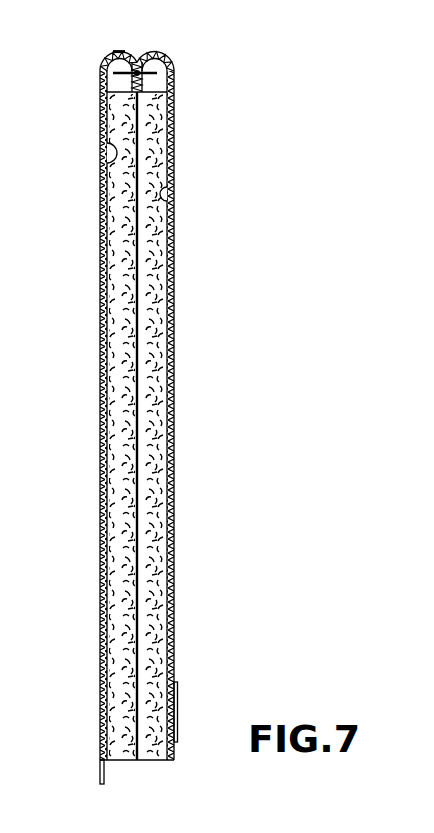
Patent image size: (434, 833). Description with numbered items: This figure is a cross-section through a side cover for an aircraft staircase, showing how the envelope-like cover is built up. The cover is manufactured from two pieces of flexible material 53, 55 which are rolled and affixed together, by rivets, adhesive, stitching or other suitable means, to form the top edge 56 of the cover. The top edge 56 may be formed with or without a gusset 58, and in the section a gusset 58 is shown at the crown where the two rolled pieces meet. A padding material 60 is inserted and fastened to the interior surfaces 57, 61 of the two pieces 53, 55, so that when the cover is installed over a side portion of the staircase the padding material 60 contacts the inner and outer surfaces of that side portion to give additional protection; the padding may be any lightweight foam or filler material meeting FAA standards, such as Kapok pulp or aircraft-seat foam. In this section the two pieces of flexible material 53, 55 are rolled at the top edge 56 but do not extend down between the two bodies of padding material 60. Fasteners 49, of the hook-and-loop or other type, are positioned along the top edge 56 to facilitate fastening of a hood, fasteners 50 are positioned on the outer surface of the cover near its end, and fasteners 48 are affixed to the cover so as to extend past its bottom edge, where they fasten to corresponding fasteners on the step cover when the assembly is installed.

The fasteners 48 is at (100, 775).
The fasteners 49 is at (118, 50).
The fasteners 50 is at (178, 712).
The piece of flexible material 53 is at (175, 113).
The piece of flexible material 55 is at (104, 108).
The top edge 56 is at (155, 48).
The interior surface 57 is at (165, 202).
The gusset 58 is at (137, 68).
The padding material 60 is at (153, 263).
The interior surface 61 is at (106, 164).